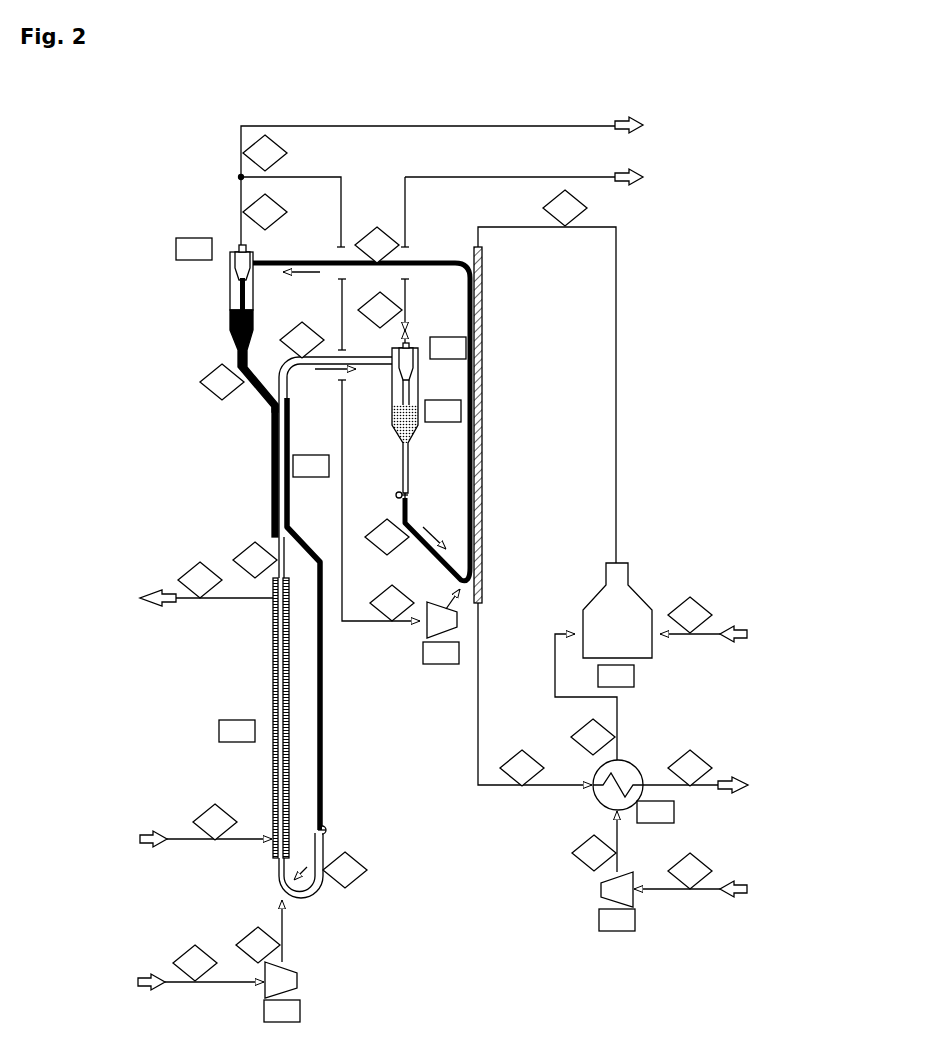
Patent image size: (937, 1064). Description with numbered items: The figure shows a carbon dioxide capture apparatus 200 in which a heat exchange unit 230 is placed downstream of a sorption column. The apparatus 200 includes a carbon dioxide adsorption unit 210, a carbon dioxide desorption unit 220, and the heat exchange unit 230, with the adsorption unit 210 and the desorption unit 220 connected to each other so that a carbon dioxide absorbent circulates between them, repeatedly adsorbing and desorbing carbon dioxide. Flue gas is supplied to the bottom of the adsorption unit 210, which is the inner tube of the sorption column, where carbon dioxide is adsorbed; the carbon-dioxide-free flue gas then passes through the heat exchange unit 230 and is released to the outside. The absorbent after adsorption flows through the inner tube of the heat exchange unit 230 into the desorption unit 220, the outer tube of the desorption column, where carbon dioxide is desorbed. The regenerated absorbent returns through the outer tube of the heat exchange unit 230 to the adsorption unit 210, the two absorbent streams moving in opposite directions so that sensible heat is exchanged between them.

The carbon dioxide capture apparatus 200 is at (201, 122).
The carbon dioxide adsorption unit 210 is at (266, 658).
The carbon dioxide desorption unit 220 is at (492, 394).
The heat exchange unit 230 is at (266, 462).